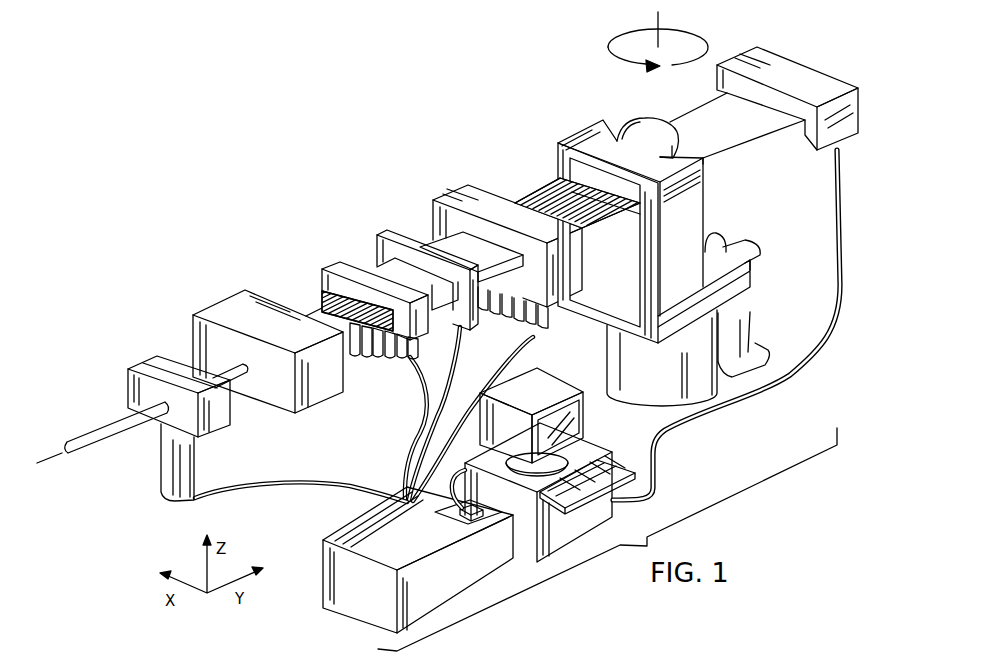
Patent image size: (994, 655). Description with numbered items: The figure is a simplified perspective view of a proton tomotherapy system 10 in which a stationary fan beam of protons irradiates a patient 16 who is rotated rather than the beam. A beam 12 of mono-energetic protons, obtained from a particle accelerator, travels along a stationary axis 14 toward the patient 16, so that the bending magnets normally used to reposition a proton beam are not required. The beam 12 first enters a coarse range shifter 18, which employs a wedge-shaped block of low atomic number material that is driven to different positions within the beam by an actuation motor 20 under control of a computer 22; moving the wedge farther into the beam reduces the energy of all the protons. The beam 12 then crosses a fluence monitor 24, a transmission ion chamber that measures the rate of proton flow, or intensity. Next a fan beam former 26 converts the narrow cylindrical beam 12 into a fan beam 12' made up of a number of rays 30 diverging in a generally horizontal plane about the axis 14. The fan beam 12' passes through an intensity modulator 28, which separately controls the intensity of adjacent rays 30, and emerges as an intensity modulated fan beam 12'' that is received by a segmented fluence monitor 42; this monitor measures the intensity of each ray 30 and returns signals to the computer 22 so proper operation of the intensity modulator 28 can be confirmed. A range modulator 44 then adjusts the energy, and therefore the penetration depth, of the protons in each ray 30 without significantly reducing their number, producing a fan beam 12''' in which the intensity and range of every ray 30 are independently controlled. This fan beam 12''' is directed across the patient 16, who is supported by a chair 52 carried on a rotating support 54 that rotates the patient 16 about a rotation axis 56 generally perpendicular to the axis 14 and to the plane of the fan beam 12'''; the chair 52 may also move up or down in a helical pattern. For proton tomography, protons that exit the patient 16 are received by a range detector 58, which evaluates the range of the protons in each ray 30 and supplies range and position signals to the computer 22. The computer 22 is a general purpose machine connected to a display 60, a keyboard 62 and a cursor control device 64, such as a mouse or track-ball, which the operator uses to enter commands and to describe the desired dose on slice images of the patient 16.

The proton tomotherapy system 10 is at (476, 125).
The beam of mono-energetic protons 12 is at (169, 408).
The fan beam 12' is at (359, 276).
The intensity modulated fan beam 12'' is at (515, 201).
The fan beam emerging from the range modulator 12''' is at (746, 139).
The stationary axis 14 is at (40, 460).
The patient 16 is at (638, 131).
The coarse range shifter 18 is at (150, 362).
The actuation motor 20 is at (172, 497).
The computer 22 is at (343, 563).
The fluence monitor 24 is at (170, 353).
The fan beam former 26 is at (233, 290).
The intensity modulator 28 is at (337, 263).
The rays 30 is at (378, 343).
The segmented fluence monitor 42 is at (380, 235).
The range modulator 44 is at (463, 190).
The chair 52 is at (685, 223).
The rotating support 54 is at (683, 390).
The rotation axis 56 is at (656, 16).
The range detector 58 is at (837, 107).
The display 60 is at (537, 392).
The keyboard 62 is at (630, 462).
The cursor control device 64 is at (466, 522).